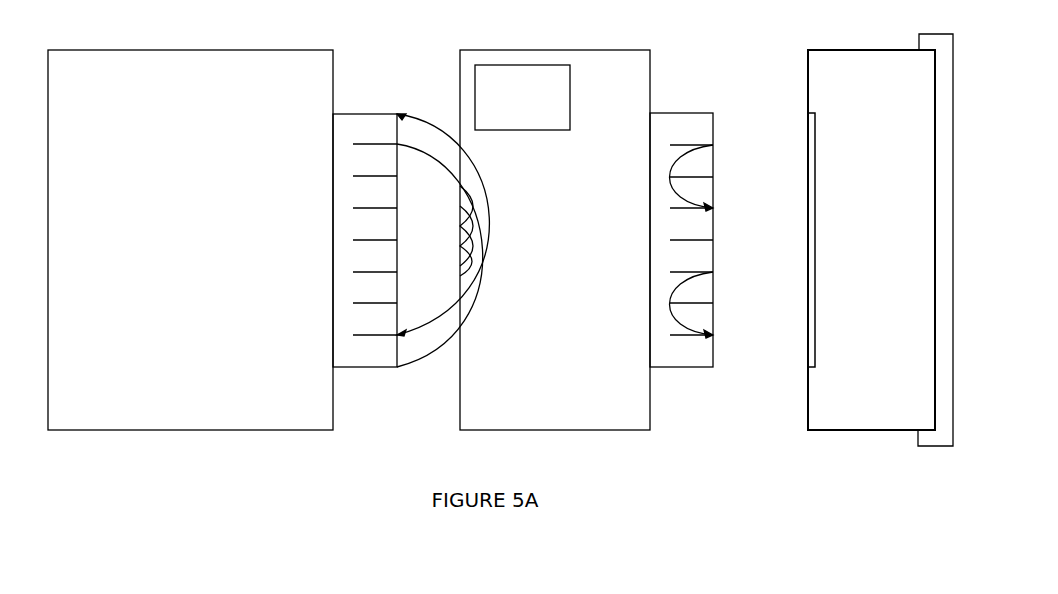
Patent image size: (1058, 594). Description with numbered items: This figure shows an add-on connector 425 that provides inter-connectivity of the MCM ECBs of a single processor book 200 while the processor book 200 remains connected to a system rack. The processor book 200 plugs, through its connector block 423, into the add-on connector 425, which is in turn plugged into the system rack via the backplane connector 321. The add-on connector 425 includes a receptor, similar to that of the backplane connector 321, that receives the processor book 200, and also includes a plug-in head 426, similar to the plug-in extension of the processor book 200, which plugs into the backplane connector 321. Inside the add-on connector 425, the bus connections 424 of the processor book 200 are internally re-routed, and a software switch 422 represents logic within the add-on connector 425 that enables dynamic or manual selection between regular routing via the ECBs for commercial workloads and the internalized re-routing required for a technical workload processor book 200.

The processor book 200 is at (190, 240).
The software switch 422 is at (522, 97).
The connector block on SMP book 423 is at (374, 367).
The cables / connections 424 is at (460, 262).
The add-on connector 425 is at (555, 240).
The plug-in head 426 is at (694, 197).
The backplane connector 321 is at (880, 240).